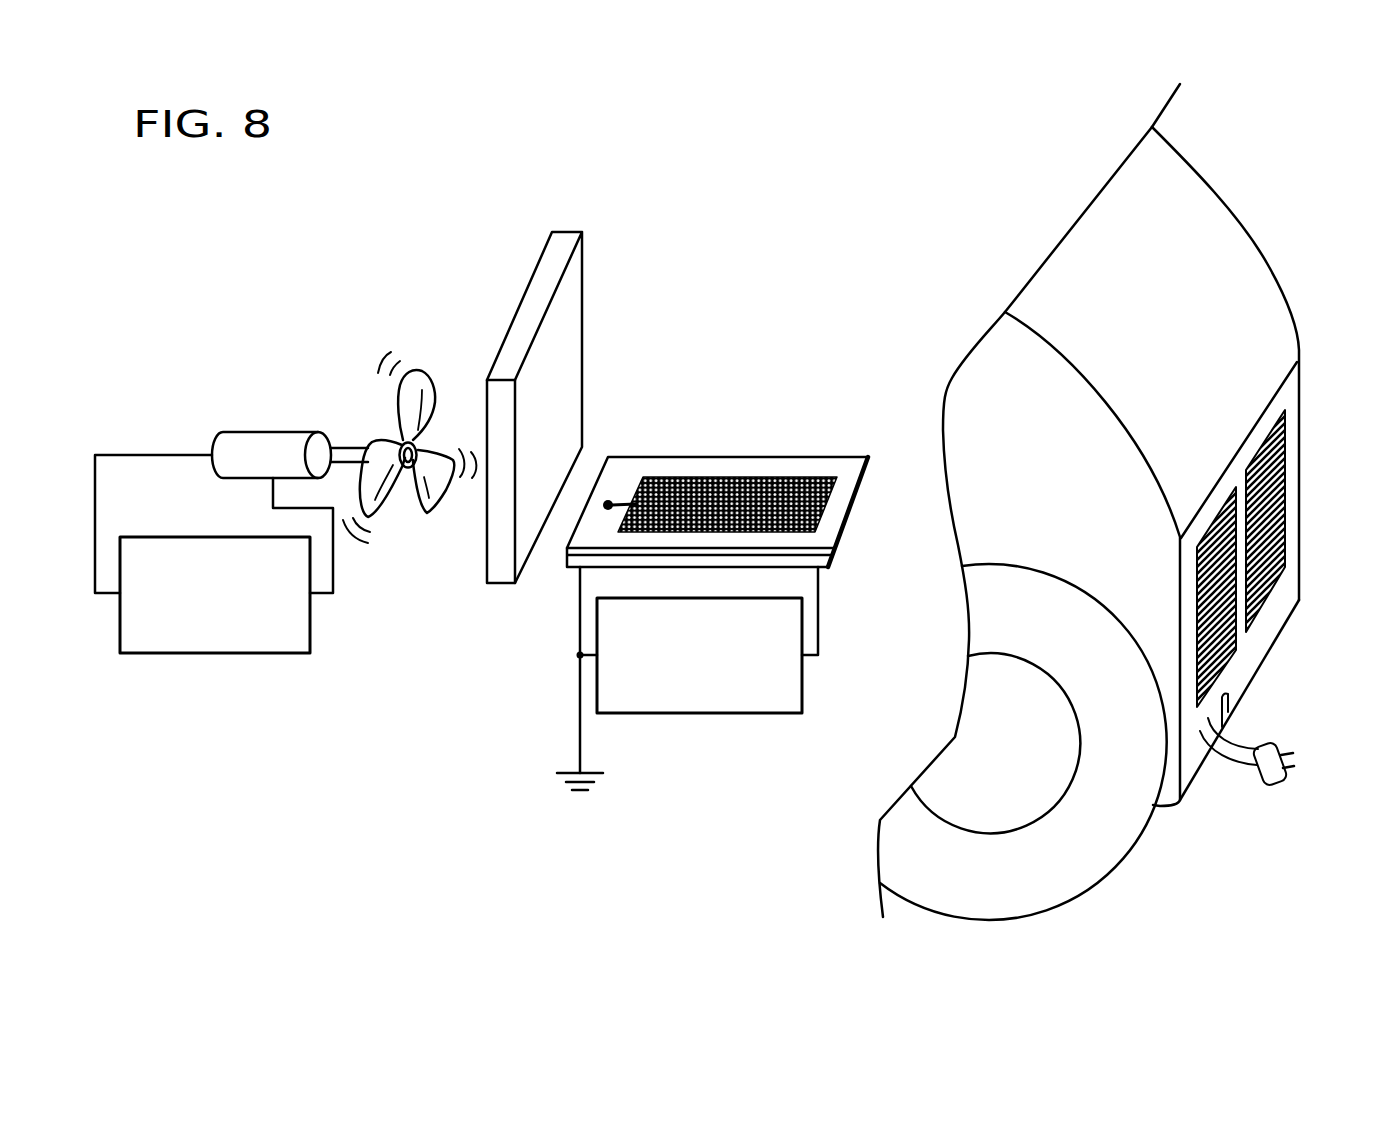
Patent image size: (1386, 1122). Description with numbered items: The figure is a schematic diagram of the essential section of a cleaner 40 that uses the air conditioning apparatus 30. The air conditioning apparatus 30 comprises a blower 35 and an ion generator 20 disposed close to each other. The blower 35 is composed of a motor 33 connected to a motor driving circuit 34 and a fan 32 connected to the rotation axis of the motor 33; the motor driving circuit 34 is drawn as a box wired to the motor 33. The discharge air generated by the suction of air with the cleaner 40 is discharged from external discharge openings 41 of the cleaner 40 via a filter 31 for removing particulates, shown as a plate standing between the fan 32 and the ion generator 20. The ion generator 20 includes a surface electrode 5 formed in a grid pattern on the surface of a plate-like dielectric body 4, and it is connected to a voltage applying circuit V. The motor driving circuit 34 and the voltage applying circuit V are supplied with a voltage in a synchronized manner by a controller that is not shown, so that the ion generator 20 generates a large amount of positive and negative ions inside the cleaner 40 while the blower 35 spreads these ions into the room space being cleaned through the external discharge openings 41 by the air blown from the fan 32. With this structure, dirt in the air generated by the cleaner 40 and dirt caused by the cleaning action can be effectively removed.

The dielectric body 4 is at (838, 503).
The surface electrode 5 is at (722, 478).
The ion generator 20 is at (842, 639).
The air conditioning apparatus 30 is at (599, 258).
The filter 31 is at (538, 263).
The fan 32 is at (400, 421).
The motor 33 is at (252, 429).
The motor driving circuit 34 is at (182, 653).
The blower 35 is at (198, 707).
The cleaner 40 is at (1287, 811).
The external discharge openings 41 is at (1287, 565).
The voltage applying circuit V is at (683, 713).